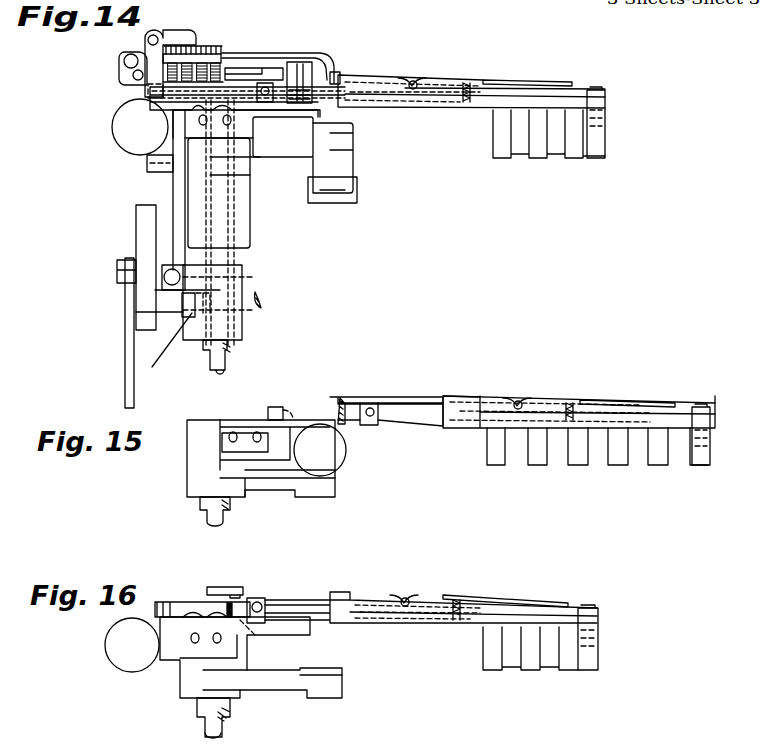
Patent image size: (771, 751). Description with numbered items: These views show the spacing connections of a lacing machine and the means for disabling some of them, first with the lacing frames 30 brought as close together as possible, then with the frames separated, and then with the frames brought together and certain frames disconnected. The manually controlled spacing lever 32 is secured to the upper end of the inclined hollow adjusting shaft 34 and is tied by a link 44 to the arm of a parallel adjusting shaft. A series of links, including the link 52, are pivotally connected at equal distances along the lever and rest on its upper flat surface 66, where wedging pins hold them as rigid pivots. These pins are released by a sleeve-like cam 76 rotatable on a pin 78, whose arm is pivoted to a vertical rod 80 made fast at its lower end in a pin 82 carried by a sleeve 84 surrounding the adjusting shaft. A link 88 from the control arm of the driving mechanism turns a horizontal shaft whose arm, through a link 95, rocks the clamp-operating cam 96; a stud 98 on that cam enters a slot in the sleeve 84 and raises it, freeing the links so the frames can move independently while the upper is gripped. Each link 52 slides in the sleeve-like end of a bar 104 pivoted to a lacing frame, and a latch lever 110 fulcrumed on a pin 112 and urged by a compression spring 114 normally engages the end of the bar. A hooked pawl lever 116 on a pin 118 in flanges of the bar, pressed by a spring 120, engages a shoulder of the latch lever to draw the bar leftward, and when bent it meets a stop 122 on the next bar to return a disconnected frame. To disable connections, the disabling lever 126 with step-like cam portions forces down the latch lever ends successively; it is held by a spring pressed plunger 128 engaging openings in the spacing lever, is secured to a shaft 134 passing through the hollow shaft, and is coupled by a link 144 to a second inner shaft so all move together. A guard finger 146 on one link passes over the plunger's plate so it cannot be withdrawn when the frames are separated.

In FIG. 14, the lacing mechanism frame 30 is at (584, 160).
In FIG. 15, the lacing mechanism frame 30 is at (690, 466).
In FIG. 16, the lacing mechanism frame 30 is at (578, 670).
In FIG. 14, the spacing lever 32 is at (266, 128).
In FIG. 15, the spacing lever 32 is at (275, 505).
In FIG. 16, the spacing lever 32 is at (298, 653).
In FIG. 14, the hollow adjusting shaft 34 is at (238, 350).
In FIG. 15, the hollow adjusting shaft 34 is at (215, 511).
In FIG. 16, the hollow adjusting shaft 34 is at (230, 710).
In FIG. 14, the link 44 is at (360, 190).
In FIG. 14, the link 52 is at (120, 109).
In FIG. 16, the link 52 is at (184, 602).
In FIG. 15, the upper flat surface 66 is at (248, 420).
In FIG. 16, the upper flat surface 66 is at (251, 650).
In FIG. 14, the sleeve-like cam 76 is at (171, 29).
In FIG. 14, the pin 78 is at (147, 39).
In FIG. 14, the vertical rod 80 is at (173, 190).
In FIG. 14, the pin 82 is at (165, 276).
In FIG. 14, the sleeve 84 is at (248, 326).
In FIG. 14, the link 88 is at (124, 73).
In FIG. 14, the link 95 is at (126, 368).
In FIG. 14, the cam 96 is at (140, 230).
In FIG. 14, the stud 98 is at (166, 349).
In FIG. 14, the bar 104 is at (475, 97).
In FIG. 15, the bar 104 is at (597, 418).
In FIG. 16, the bar 104 is at (473, 615).
In FIG. 14, the latch lever 110 is at (342, 79).
In FIG. 15, the latch lever 110 is at (410, 403).
In FIG. 16, the latch lever 110 is at (289, 597).
In FIG. 15, the pin 112 is at (362, 424).
In FIG. 16, the pin 112 is at (259, 602).
In FIG. 15, the compression spring 114 is at (332, 404).
In FIG. 16, the compression spring 114 is at (258, 635).
In FIG. 14, the pawl lever 116 is at (546, 79).
In FIG. 15, the pawl lever 116 is at (604, 396).
In FIG. 16, the pawl lever 116 is at (501, 594).
In FIG. 14, the pin 118 is at (419, 80).
In FIG. 15, the pin 118 is at (528, 385).
In FIG. 16, the pin 118 is at (407, 597).
In FIG. 14, the spring 120 is at (466, 84).
In FIG. 15, the spring 120 is at (574, 402).
In FIG. 16, the spring 120 is at (476, 585).
In FIG. 14, the stop 122 is at (588, 86).
In FIG. 15, the stop 122 is at (681, 406).
In FIG. 16, the stop 122 is at (580, 608).
In FIG. 14, the disabling lever 126 is at (254, 70).
In FIG. 16, the disabling lever 126 is at (229, 587).
In FIG. 14, the spring pressed plunger 128 is at (322, 110).
In FIG. 14, the shaft 134 is at (228, 368).
In FIG. 16, the shaft 134 is at (224, 730).
In FIG. 14, the link 144 is at (145, 165).
In FIG. 14, the guard finger 146 is at (291, 52).